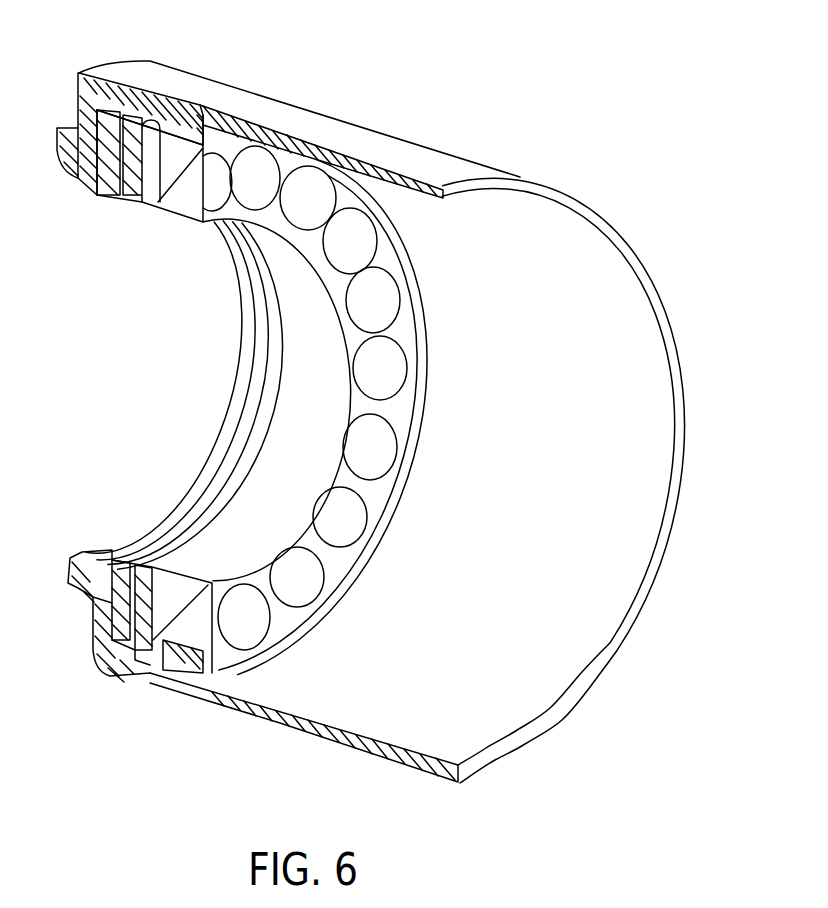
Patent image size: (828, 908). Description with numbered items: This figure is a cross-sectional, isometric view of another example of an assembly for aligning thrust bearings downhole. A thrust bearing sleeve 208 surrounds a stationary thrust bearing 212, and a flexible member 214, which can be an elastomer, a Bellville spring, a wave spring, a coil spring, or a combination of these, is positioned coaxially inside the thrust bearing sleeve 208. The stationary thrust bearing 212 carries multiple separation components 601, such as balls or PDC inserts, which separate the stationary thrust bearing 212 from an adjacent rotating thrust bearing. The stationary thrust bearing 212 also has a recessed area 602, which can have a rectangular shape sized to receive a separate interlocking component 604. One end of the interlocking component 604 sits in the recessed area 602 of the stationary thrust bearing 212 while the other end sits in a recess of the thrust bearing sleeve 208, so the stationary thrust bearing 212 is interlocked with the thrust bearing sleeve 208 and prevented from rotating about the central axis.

The thrust bearing sleeve 208 is at (362, 123).
The stationary thrust bearing 212 is at (177, 203).
The flexible member 214 is at (200, 484).
The separation components 601 is at (213, 690).
The recessed area 602 is at (137, 202).
The interlocking component 604 is at (163, 120).